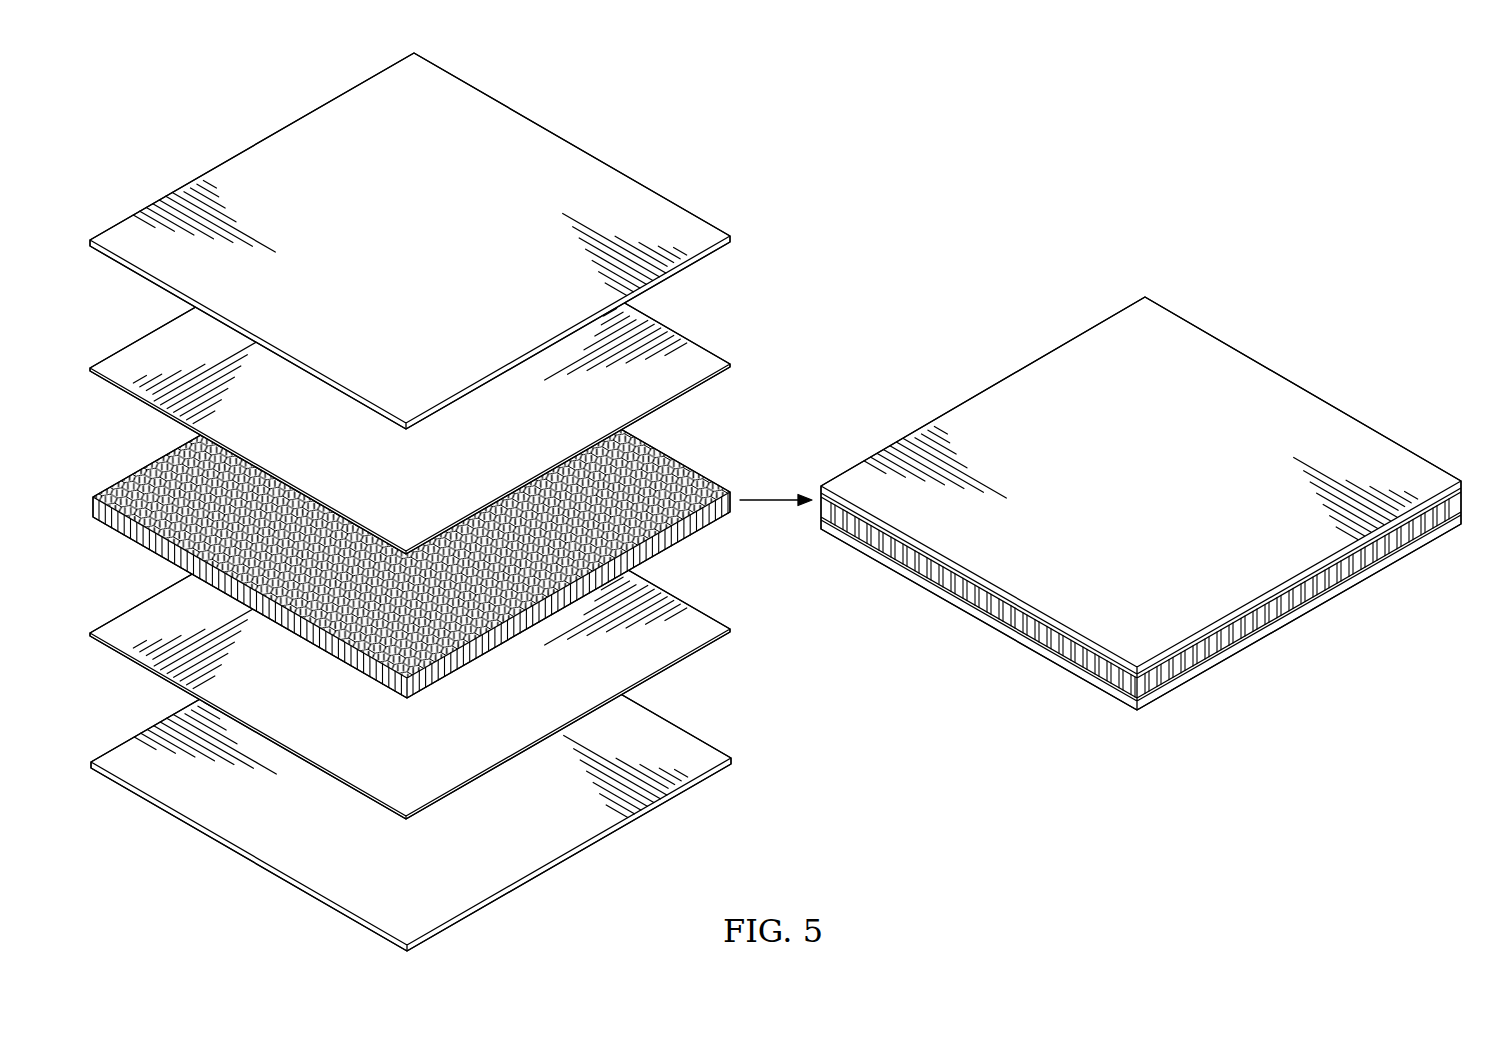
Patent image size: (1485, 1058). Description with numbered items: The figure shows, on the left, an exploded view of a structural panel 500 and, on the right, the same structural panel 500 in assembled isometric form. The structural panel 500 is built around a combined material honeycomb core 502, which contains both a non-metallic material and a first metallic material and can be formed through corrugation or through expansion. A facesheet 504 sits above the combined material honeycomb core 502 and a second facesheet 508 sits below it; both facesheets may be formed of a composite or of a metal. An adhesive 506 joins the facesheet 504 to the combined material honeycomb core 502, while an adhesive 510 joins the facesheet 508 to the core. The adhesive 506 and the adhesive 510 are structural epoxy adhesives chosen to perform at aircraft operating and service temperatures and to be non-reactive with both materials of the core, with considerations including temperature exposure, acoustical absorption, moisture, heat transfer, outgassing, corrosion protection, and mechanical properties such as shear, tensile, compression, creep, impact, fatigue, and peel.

The structural panel 500 is at (1297, 346).
The combined material honeycomb core 502 is at (704, 459).
The facesheet 504 is at (571, 143).
The adhesive 506 is at (710, 352).
The facesheet 508 is at (578, 851).
The adhesive 510 is at (690, 653).